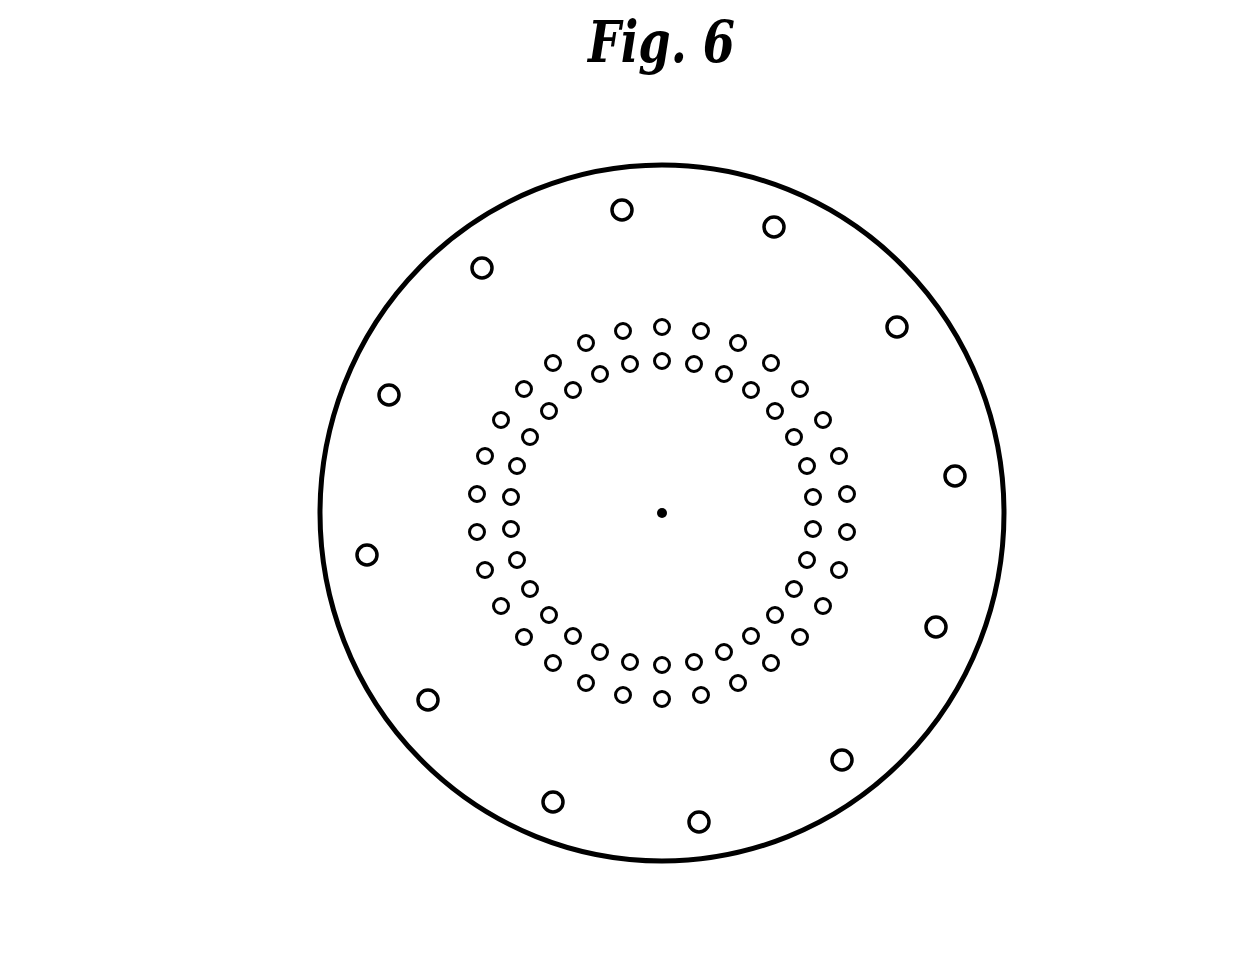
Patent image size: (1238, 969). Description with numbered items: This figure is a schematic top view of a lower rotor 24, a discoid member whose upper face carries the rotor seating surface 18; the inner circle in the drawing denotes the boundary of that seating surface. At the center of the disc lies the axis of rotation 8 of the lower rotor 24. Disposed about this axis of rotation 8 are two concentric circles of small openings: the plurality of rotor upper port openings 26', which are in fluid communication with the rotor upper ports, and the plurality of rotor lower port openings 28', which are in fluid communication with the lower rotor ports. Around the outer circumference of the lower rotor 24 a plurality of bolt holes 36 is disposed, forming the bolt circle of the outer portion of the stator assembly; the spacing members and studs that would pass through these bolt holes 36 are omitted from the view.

The axis of rotation 8 is at (667, 513).
The rotor seating surface 18 is at (820, 307).
The lower rotor 24 is at (980, 410).
The rotor upper port openings 26' is at (662, 398).
The rotor lower port openings 28' is at (459, 523).
The bolt holes 36 is at (390, 397).